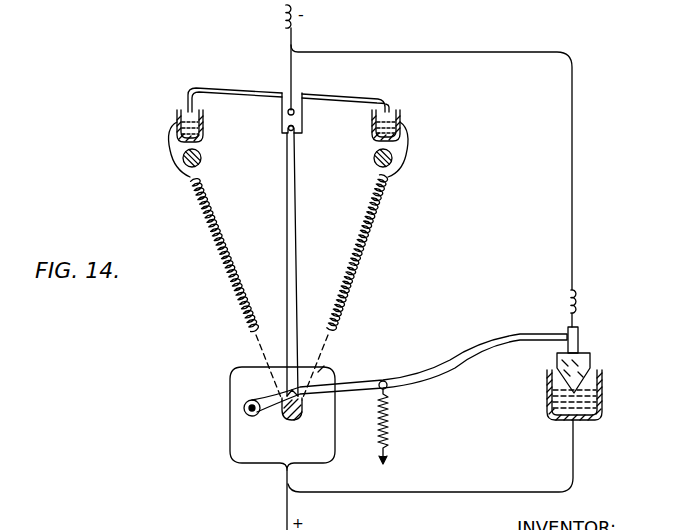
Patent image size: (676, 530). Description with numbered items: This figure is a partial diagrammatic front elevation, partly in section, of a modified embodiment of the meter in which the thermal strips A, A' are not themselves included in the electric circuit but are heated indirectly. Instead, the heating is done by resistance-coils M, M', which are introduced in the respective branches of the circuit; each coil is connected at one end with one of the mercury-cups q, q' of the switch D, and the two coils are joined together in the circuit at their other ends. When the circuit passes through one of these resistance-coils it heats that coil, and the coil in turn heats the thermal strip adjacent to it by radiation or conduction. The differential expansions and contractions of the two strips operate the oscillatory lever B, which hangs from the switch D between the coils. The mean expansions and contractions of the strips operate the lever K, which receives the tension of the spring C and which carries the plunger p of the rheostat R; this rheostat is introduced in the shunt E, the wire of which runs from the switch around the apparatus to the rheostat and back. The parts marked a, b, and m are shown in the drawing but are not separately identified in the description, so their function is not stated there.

The switch D is at (288, 103).
The mercury-cup q is at (179, 143).
The mercury-cup q' is at (394, 137).
The pivot a is at (287, 158).
The resistance-coil M is at (236, 288).
The resistance-coil M' is at (345, 287).
The oscillatory lever B is at (296, 264).
The thermal strip A is at (282, 418).
The thermal strip A' is at (339, 362).
The contact cup b is at (292, 420).
The lever K is at (409, 373).
The spring C is at (390, 426).
The plunger p is at (590, 365).
The mercury m is at (553, 402).
The rheostat R is at (581, 395).
The shunt E is at (431, 287).